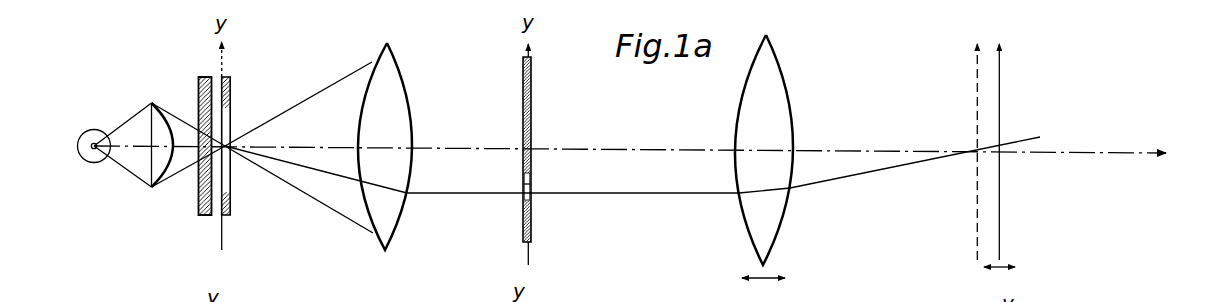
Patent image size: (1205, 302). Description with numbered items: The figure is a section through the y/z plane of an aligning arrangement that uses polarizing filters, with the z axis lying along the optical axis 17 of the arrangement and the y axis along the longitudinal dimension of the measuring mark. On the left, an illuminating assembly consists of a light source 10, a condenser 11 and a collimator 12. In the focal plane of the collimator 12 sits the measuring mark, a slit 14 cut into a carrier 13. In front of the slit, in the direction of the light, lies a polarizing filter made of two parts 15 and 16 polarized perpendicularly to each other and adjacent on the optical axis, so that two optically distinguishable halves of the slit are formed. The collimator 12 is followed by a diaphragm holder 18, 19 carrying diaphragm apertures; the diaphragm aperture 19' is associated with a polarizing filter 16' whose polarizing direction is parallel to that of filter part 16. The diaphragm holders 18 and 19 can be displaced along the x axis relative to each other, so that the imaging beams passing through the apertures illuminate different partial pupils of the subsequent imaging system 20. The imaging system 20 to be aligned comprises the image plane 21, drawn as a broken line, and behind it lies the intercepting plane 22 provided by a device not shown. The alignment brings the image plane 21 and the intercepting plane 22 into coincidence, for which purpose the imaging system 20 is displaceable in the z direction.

The light source 10 is at (93, 158).
The condenser 11 is at (156, 133).
The collimator 12 is at (390, 88).
The carrier 13 is at (231, 199).
The slit 14 is at (231, 104).
The polarizing filter part 15 is at (198, 108).
The polarizing filter part 16 is at (180, 188).
The polarizing filter 16' is at (554, 175).
The optical axis 17 is at (1102, 153).
The diaphragm holder 18 is at (531, 80).
The diaphragm holder 19 is at (551, 195).
The diaphragm aperture 19' is at (496, 209).
The imaging system 20 is at (765, 78).
The image plane 21 is at (976, 83).
The intercepting plane 22 is at (1002, 82).